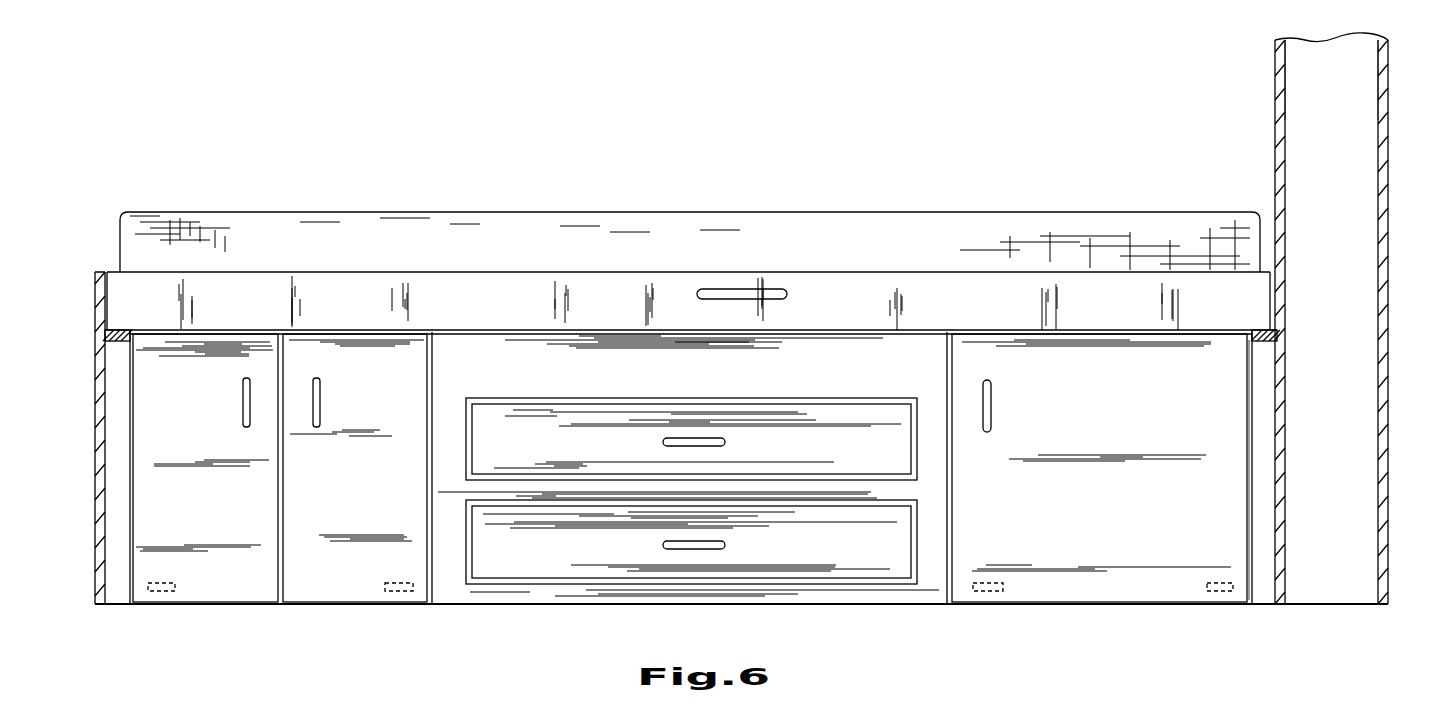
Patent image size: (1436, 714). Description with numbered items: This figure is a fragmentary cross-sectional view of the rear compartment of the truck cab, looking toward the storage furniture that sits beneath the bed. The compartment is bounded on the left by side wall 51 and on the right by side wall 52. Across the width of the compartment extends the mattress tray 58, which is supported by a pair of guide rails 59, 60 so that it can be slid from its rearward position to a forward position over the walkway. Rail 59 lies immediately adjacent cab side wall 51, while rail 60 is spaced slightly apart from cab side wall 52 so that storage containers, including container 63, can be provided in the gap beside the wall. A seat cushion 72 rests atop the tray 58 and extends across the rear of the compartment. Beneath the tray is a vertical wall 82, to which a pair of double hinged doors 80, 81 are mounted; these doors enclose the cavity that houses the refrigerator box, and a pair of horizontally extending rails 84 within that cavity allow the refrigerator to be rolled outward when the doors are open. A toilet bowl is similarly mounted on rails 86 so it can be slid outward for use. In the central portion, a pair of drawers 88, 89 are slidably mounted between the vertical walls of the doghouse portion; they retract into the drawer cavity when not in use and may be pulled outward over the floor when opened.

The side wall 51 is at (95, 577).
The side wall 52 is at (1388, 450).
The mattress tray 58 is at (870, 283).
The guide rail 59 is at (122, 330).
The guide rail 60 is at (1260, 327).
The storage container 63 is at (1303, 83).
The seat cushion 72 is at (796, 236).
The double hinged door 80 is at (218, 373).
The double hinged door 81 is at (337, 358).
The vertical wall 82 is at (485, 360).
The rails 84 is at (408, 600).
The rails 86 is at (1218, 590).
The drawer 88 is at (518, 458).
The drawer 89 is at (570, 565).